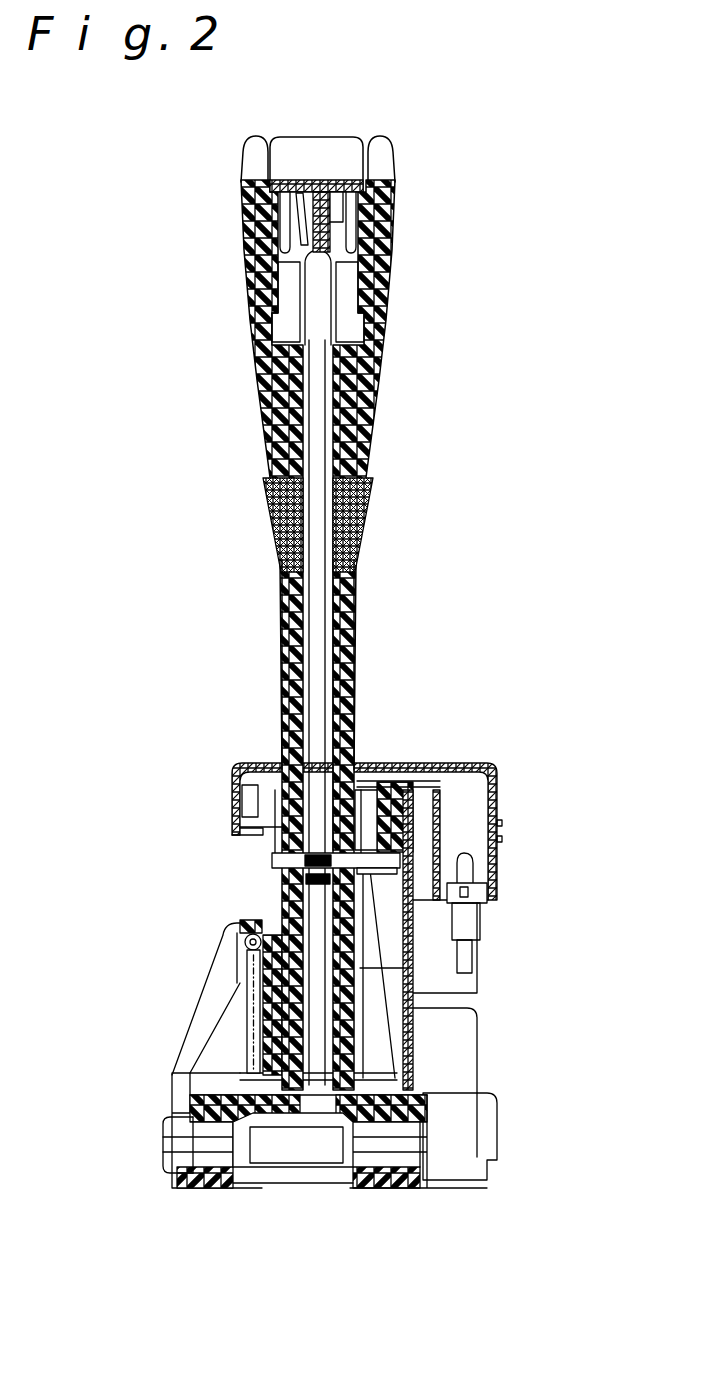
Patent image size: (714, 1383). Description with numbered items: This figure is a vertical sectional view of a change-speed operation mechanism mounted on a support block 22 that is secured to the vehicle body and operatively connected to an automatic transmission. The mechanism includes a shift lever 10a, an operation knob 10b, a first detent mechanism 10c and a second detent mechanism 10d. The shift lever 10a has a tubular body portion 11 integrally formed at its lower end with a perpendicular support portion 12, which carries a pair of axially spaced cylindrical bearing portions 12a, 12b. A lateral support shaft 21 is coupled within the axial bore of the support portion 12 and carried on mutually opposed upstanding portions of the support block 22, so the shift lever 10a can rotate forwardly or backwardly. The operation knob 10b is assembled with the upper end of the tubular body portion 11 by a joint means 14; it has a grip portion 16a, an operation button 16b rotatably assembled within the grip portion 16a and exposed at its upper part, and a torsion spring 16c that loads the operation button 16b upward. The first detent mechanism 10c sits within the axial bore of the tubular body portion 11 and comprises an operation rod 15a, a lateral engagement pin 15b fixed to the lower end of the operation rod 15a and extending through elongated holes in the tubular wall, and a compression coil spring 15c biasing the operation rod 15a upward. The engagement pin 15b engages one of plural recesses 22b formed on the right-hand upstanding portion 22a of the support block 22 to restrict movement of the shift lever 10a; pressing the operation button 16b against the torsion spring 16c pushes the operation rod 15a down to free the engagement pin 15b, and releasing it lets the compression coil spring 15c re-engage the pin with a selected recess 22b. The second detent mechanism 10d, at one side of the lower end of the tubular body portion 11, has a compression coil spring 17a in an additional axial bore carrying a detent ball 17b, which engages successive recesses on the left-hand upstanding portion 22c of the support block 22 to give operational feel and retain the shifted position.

The shift lever 10a is at (365, 609).
The operation knob 10b is at (407, 256).
The first detent mechanism 10c is at (332, 714).
The second detent mechanism 10d is at (240, 1033).
The tubular body portion 11 is at (282, 665).
The support portion 12 is at (390, 1068).
The cylindrical bearing portion 12a is at (217, 1188).
The cylindrical bearing portion 12b is at (388, 1188).
The joint means 14 is at (278, 527).
The operation rod 15a is at (317, 430).
The lateral engagement pin 15b is at (260, 817).
The compression coil spring 15c is at (313, 910).
The grip portion 16a is at (247, 302).
The operation button 16b is at (313, 153).
The torsion spring 16c is at (283, 220).
The compression coil spring 17a is at (253, 983).
The detent ball 17b is at (247, 920).
The lateral support shaft 21 is at (305, 1153).
The support block 22 is at (497, 1132).
The right-hand upstanding portion 22a is at (383, 810).
The recess 22b is at (413, 853).
The left-hand upstanding portion 22c is at (243, 1013).